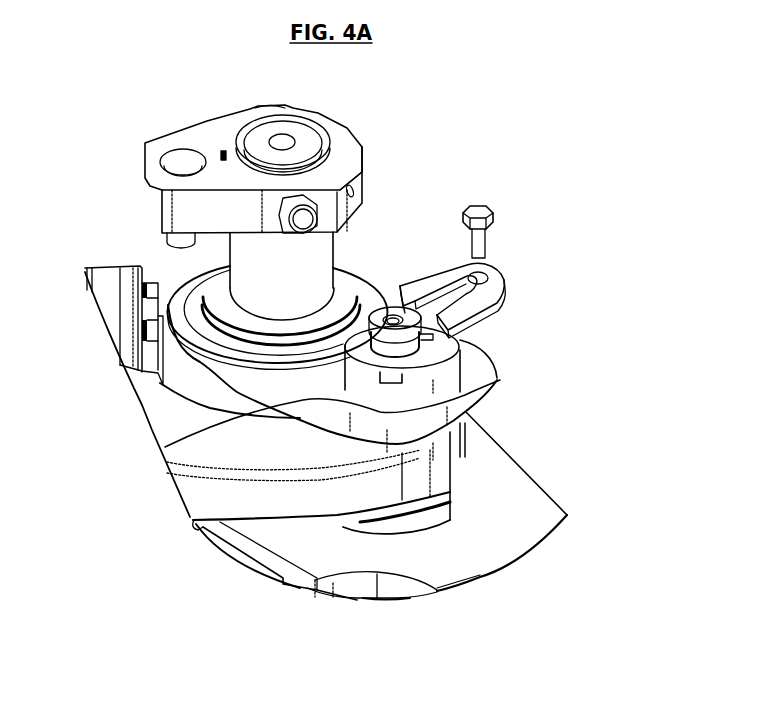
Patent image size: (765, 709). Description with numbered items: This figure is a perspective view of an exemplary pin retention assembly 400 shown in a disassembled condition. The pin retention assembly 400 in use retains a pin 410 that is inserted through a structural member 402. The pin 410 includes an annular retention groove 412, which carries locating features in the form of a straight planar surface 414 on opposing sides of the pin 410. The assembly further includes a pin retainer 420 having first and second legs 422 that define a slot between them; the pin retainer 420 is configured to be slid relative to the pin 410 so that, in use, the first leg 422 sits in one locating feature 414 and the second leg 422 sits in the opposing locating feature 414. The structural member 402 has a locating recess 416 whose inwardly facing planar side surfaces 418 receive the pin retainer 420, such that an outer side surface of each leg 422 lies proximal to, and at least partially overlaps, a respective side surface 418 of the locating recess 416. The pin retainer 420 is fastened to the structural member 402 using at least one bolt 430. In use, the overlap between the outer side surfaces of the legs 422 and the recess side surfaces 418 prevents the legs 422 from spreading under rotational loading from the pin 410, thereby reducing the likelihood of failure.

The pin retention assembly 400 is at (583, 262).
The structural member 402 is at (462, 367).
The pin 410 is at (386, 298).
The annular retention groove 412 is at (410, 350).
The straight planar surface 414 is at (415, 365).
The locating recess 416 is at (463, 336).
The planar side surface 418 is at (390, 342).
The pin retainer 420 is at (502, 268).
The leg 422 is at (425, 283).
The bolt 430 is at (485, 198).